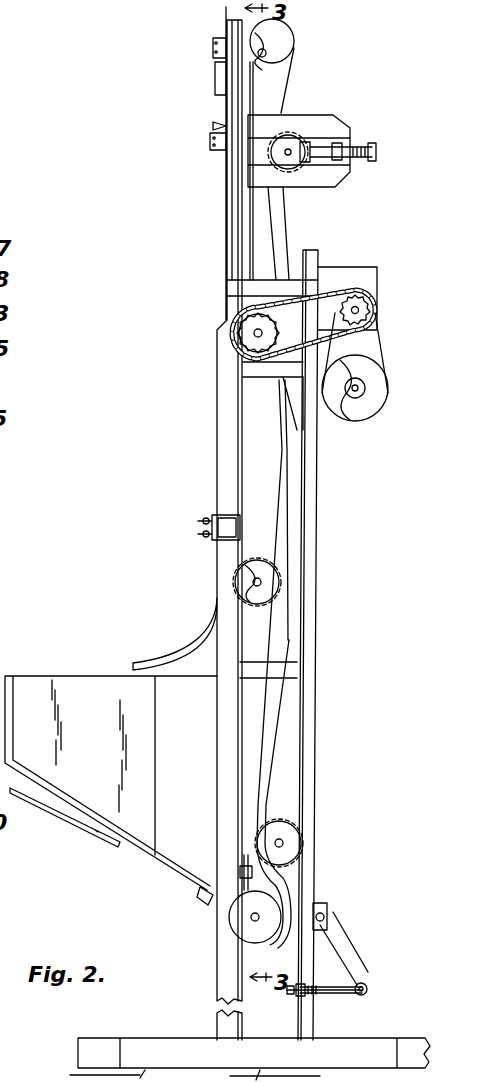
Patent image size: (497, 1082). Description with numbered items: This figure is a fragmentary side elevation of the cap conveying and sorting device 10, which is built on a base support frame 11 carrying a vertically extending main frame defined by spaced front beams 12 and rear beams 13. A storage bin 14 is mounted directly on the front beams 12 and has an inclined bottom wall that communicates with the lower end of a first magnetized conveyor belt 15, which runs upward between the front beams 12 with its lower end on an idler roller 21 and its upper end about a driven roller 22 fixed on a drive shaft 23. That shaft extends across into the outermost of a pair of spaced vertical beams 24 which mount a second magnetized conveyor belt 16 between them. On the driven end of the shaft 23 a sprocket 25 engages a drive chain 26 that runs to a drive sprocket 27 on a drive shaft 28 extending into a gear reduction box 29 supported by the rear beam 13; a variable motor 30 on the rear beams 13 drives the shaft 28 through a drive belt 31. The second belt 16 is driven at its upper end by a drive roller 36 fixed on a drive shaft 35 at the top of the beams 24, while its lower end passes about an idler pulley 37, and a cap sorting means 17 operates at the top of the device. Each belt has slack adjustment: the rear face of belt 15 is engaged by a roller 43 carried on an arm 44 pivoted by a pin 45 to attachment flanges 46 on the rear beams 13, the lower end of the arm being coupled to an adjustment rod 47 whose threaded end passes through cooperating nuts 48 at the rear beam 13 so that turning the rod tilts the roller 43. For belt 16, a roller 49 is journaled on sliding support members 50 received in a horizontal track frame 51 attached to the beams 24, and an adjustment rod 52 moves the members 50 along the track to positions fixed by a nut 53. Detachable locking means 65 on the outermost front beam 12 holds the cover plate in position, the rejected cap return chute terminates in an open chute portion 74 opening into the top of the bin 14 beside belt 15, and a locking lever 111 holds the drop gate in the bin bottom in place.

The cap conveying and sorting device 10 is at (178, 177).
The base support frame 11 is at (142, 1044).
The front beams 12 is at (217, 790).
The rear beams 13 is at (318, 600).
The bin 14 is at (70, 676).
The belt 15 is at (274, 803).
The belt 16 is at (280, 243).
The cap sorting means 17 is at (213, 126).
The idler roller 21 is at (248, 935).
The driven roller 22 is at (290, 380).
The drive shaft 23 is at (254, 335).
The beams 24 is at (238, 235).
The sprocket 25 is at (250, 326).
The drive chain 26 is at (326, 292).
The drive sprocket 27 is at (368, 308).
The drive shaft 28 is at (360, 306).
The gear reduction box 29 is at (362, 272).
The variable motor 30 is at (378, 395).
The drive belt 31 is at (378, 358).
The drive shaft 35 is at (266, 53).
The drive roller 36 is at (278, 37).
The idler pulley 37 is at (262, 562).
The roller 43 is at (290, 836).
The arm 44 is at (325, 905).
The pin 45 is at (325, 917).
The attachment flanges 46 is at (327, 912).
The adjustment rod 47 is at (342, 993).
The nuts 48 is at (298, 996).
The roller 49 is at (305, 147).
The sliding support members 50 is at (291, 165).
The track frame 51 is at (335, 125).
The adjustment rod 52 is at (338, 162).
The nut 53 is at (360, 148).
The detachable locking means 65 is at (203, 526).
The open chute portion 74 is at (196, 640).
The locking lever 111 is at (15, 800).